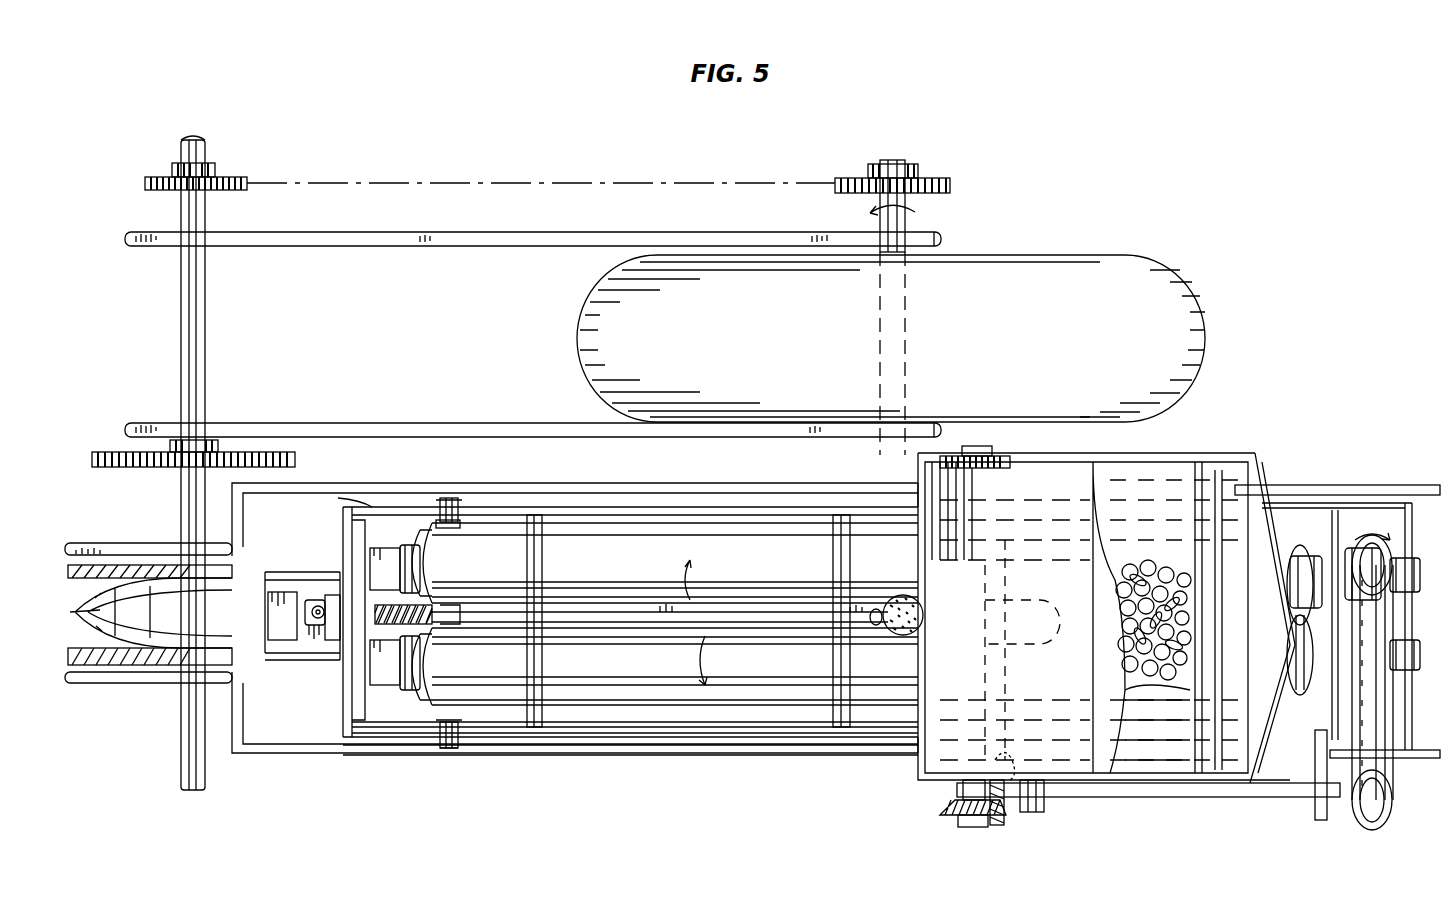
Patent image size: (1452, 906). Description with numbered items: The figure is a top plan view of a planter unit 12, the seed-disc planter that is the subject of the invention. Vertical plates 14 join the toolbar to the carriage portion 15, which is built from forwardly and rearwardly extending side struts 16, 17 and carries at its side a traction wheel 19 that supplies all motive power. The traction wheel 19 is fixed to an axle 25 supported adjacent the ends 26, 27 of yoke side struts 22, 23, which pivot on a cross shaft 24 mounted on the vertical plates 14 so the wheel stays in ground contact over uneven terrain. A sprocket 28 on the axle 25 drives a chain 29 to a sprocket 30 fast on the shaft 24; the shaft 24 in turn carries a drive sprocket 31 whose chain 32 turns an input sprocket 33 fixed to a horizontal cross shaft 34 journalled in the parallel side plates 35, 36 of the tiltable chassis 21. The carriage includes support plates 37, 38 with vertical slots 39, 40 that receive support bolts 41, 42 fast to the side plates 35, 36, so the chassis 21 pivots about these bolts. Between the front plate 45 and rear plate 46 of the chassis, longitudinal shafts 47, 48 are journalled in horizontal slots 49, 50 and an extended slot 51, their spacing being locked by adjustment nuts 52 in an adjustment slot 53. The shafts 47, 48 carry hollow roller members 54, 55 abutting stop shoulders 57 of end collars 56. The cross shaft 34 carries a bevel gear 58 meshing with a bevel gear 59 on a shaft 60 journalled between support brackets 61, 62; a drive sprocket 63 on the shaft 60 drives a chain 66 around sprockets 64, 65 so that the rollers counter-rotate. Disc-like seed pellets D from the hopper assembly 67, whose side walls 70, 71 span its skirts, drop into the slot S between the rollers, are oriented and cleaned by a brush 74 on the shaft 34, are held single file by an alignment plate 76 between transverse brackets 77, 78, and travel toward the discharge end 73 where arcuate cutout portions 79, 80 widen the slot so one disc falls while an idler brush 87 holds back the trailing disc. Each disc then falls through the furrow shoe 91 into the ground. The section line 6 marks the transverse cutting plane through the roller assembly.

The section line 6- 6 is at (1436, 622).
The planter unit 12 is at (377, 155).
The vertical plates 14 is at (90, 562).
The carriage portion 15 is at (285, 770).
The side strut 16 is at (1403, 760).
The side strut 17 is at (1385, 492).
The traction wheel 19 is at (1150, 270).
The chassis 21 is at (560, 735).
The side strut 22 is at (272, 420).
The side strut 23 is at (255, 247).
The cross shaft 24 is at (190, 303).
The axle 25 is at (880, 222).
The end 26 is at (935, 425).
The end 27 is at (942, 240).
The sprocket 28 is at (940, 178).
The chain 29 is at (512, 183).
The sprocket 30 is at (160, 178).
The drive sprocket 31 is at (112, 452).
The chain 32 is at (385, 500).
The input sprocket 33 is at (925, 462).
The cross shaft 34 is at (960, 800).
The side plate 35 is at (680, 725).
The side plate 36 is at (655, 518).
The support plate 37 is at (388, 750).
The support plate 38 is at (575, 505).
The vertical slot 39 is at (445, 752).
The vertical slot 40 is at (440, 498).
The support bolt 41 is at (440, 712).
The support bolt 42 is at (440, 527).
The front plate 45 is at (370, 565).
The rear plate 46 is at (1338, 540).
The shaft 47 is at (360, 680).
The shaft 48 is at (360, 545).
The horizontal slot 49 is at (352, 736).
The horizontal slot 50 is at (372, 510).
The extended horizontal slot 51 is at (1360, 548).
The adjustment nut 52 is at (1320, 560).
The adjustment slot 53 is at (1345, 628).
The roller member 54 is at (640, 674).
The roller member 55 is at (612, 572).
The end collar 56 is at (1290, 562).
The stop shoulder 57 is at (1290, 606).
The bevel gear 58 is at (948, 828).
The bevel gear 59 is at (1010, 810).
The shaft 60 is at (1160, 798).
The support bracket 61 is at (1048, 812).
The support bracket 62 is at (1315, 820).
The drive sprocket 63 is at (1378, 820).
The sprocket 64 is at (1405, 688).
The sprocket 65 is at (1385, 548).
The drive chain 66 is at (1380, 692).
The hopper assembly 67 is at (1231, 478).
The side wall 70 is at (1120, 552).
The side wall 71 is at (1120, 665).
The discharge end 73 is at (445, 595).
The orienting and cleaning brush 74 is at (903, 596).
The alignment plate 76 is at (582, 630).
The transverse bracket 77 is at (545, 587).
The transverse bracket 78 is at (833, 568).
The arcuate cutout portion 79 is at (432, 672).
The arcuate cutout portion 80 is at (432, 558).
The idler brush 87 is at (355, 670).
The furrow shoe 91 is at (165, 665).
The slot S is at (455, 608).
The discs D is at (1120, 598).